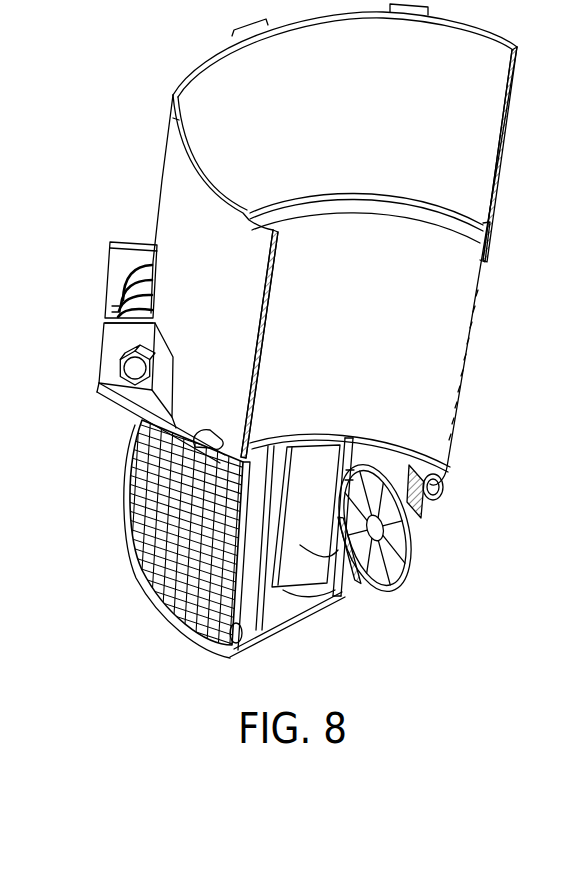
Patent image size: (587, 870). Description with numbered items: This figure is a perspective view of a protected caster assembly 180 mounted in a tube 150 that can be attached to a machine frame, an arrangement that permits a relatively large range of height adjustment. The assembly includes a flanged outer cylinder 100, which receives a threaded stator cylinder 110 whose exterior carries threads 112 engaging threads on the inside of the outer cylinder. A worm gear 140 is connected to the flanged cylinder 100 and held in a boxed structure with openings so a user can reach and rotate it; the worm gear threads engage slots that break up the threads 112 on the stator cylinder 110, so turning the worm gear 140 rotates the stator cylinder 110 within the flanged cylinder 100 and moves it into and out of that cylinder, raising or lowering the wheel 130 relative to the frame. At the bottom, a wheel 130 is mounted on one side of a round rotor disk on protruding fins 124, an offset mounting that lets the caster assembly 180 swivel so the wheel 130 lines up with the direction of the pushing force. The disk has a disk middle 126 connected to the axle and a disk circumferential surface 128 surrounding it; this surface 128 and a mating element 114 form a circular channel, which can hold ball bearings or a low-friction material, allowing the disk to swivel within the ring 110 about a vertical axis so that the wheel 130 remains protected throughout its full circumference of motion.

The protected caster assembly 180 is at (93, 94).
The stator cylinder 110 is at (390, 322).
The support tube 150 is at (172, 177).
The worm gear 140 is at (117, 307).
The flanged outer cylinder 100 is at (140, 397).
The threads 112 is at (130, 513).
The protruding fins 124 is at (380, 433).
The disk middle 126 is at (280, 607).
The wheel 130 is at (390, 570).
The disk circumferential surface 128 is at (430, 503).
The mating channel element 114 is at (438, 478).